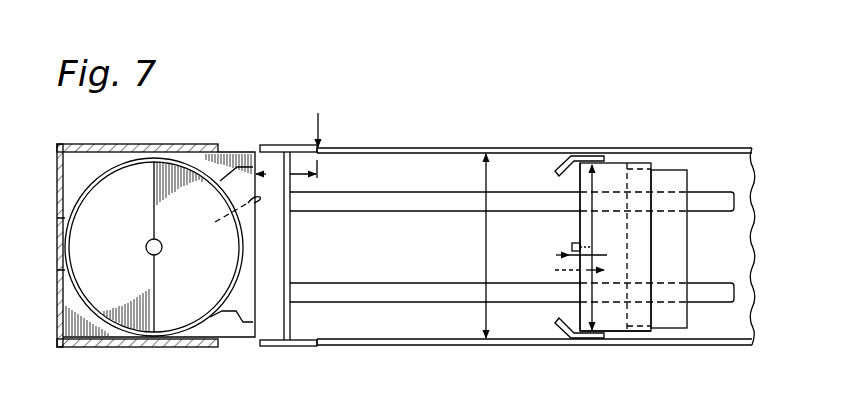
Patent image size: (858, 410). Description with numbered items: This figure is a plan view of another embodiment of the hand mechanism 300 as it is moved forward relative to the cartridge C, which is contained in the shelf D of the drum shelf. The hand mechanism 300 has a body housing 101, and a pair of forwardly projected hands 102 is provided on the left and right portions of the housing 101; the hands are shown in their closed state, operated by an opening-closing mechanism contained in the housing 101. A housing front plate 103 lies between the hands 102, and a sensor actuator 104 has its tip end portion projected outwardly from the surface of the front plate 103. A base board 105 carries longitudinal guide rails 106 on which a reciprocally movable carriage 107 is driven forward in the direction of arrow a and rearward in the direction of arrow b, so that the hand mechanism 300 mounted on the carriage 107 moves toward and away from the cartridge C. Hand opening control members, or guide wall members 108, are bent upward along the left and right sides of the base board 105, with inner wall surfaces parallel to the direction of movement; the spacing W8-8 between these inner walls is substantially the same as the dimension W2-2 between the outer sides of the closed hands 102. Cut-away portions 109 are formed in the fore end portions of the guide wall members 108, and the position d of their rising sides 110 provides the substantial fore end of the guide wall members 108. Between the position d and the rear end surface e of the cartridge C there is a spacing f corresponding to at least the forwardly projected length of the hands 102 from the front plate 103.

The body housing 101 is at (615, 331).
The hands 102 is at (558, 157).
The housing front plate 103 is at (579, 273).
The sensor actuator 104 is at (571, 246).
The base board 105 is at (752, 268).
The longitudinal guide rails 106 is at (392, 198).
The carriage 107 is at (688, 243).
The hand opening control members 108 is at (470, 147).
The cut-away portions 109 is at (265, 146).
The rising sides 110 is at (310, 146).
The hand mechanism 300 is at (612, 172).
The shelf D is at (116, 143).
The cartridge C is at (148, 172).
The rear end surface e is at (229, 215).
The spacing f is at (266, 174).
The position of the rising sides d is at (307, 134).
The arrow a is at (573, 254).
The arrow b is at (587, 270).
The dimension of the spacing between the inner walls W8-8 is at (479, 246).
The dimension between the outer sides of the hands W2-2 is at (604, 247).